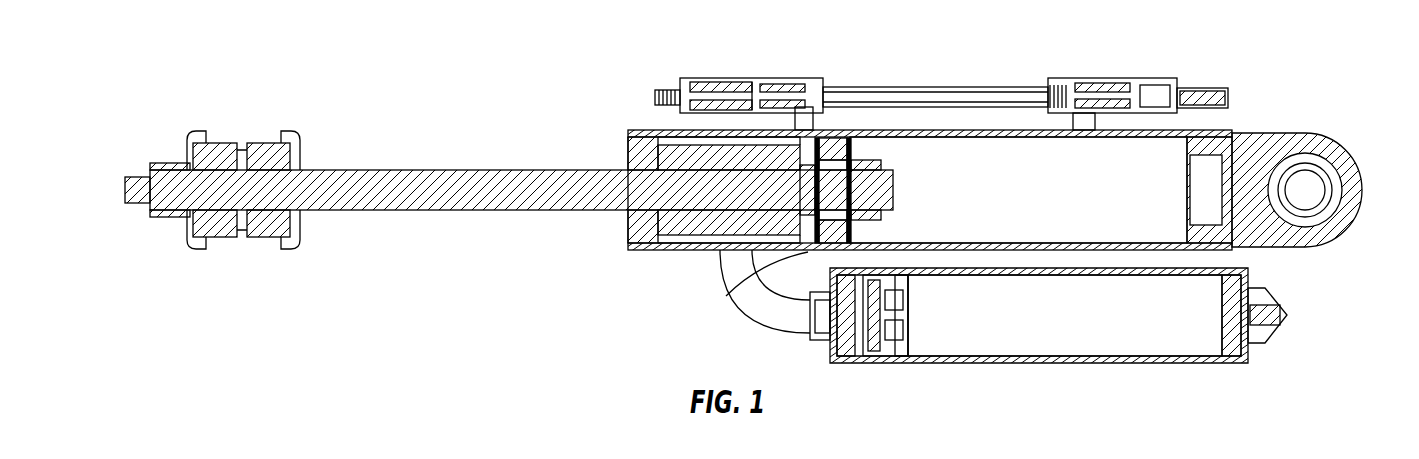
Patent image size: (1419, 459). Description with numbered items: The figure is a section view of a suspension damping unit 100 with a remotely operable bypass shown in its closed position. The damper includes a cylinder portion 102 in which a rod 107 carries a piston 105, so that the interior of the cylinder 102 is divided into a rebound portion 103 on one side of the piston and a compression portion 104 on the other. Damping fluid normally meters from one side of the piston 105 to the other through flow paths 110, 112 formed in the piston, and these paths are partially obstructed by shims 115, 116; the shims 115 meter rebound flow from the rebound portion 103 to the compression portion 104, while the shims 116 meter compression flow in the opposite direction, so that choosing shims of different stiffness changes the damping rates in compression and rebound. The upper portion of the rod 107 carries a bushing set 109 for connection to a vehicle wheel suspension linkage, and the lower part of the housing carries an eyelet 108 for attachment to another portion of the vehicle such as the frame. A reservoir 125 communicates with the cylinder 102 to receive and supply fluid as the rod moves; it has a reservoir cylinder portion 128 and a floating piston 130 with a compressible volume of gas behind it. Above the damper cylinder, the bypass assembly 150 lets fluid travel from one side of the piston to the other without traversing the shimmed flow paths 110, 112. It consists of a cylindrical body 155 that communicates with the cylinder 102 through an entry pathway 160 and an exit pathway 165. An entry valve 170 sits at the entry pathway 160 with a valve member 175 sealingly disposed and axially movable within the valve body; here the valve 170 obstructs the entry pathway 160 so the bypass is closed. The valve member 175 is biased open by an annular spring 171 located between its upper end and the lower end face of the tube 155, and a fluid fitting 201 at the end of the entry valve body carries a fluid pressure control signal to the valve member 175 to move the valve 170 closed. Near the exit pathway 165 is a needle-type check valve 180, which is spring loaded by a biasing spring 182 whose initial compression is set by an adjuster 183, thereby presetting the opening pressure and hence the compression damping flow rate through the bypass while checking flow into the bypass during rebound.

The suspension damping unit 100 is at (242, 85).
The cylinder portion 102 is at (1200, 128).
The rebound portion 103 is at (722, 258).
The compression portion 104 is at (1125, 224).
The piston 105 is at (745, 283).
The rod 107 is at (430, 185).
The eyelet 108 is at (1305, 190).
The bushing set 109 is at (272, 243).
The flow path 110 is at (835, 175).
The flow path 112 is at (855, 212).
The shims 115 is at (855, 152).
The shims 116 is at (800, 168).
The reservoir 125 is at (1227, 378).
The reservoir cylinder portion 128 is at (1120, 363).
The floating piston 130 is at (878, 362).
The bypass assembly 150 is at (968, 70).
The cylindrical body 155 is at (893, 80).
The entry pathway 160 is at (1095, 128).
The exit pathway 165 is at (796, 122).
The entry valve 170 is at (1150, 80).
The annular spring 171 is at (1062, 80).
The valve member 175 is at (1113, 80).
The needle-type check valve 180 is at (797, 78).
The biasing spring 182 is at (757, 78).
The adjuster 183 is at (664, 80).
The fluid fitting 201 is at (1228, 95).